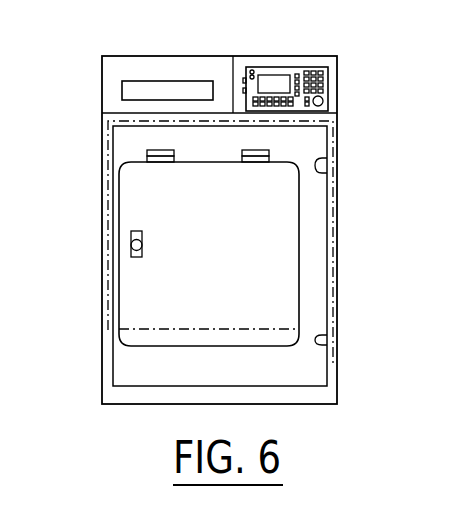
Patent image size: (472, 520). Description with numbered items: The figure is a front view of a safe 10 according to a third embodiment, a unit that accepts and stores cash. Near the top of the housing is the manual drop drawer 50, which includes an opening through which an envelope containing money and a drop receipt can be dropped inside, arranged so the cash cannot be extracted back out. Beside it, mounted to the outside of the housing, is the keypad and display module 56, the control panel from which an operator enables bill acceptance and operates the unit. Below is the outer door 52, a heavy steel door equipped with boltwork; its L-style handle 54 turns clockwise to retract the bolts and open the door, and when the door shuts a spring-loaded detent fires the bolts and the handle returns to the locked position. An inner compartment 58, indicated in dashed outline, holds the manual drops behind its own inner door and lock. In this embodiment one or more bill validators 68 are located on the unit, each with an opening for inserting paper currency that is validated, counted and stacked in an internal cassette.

The safe/central network control unit 10 is at (66, 177).
The manual drop drawer 50 is at (122, 89).
The outer door 52 is at (120, 347).
The "L" style handle 54 is at (131, 240).
The keypad and display module 56 is at (329, 91).
The inner compartment 58 is at (333, 224).
The bill validator 68 is at (248, 151).